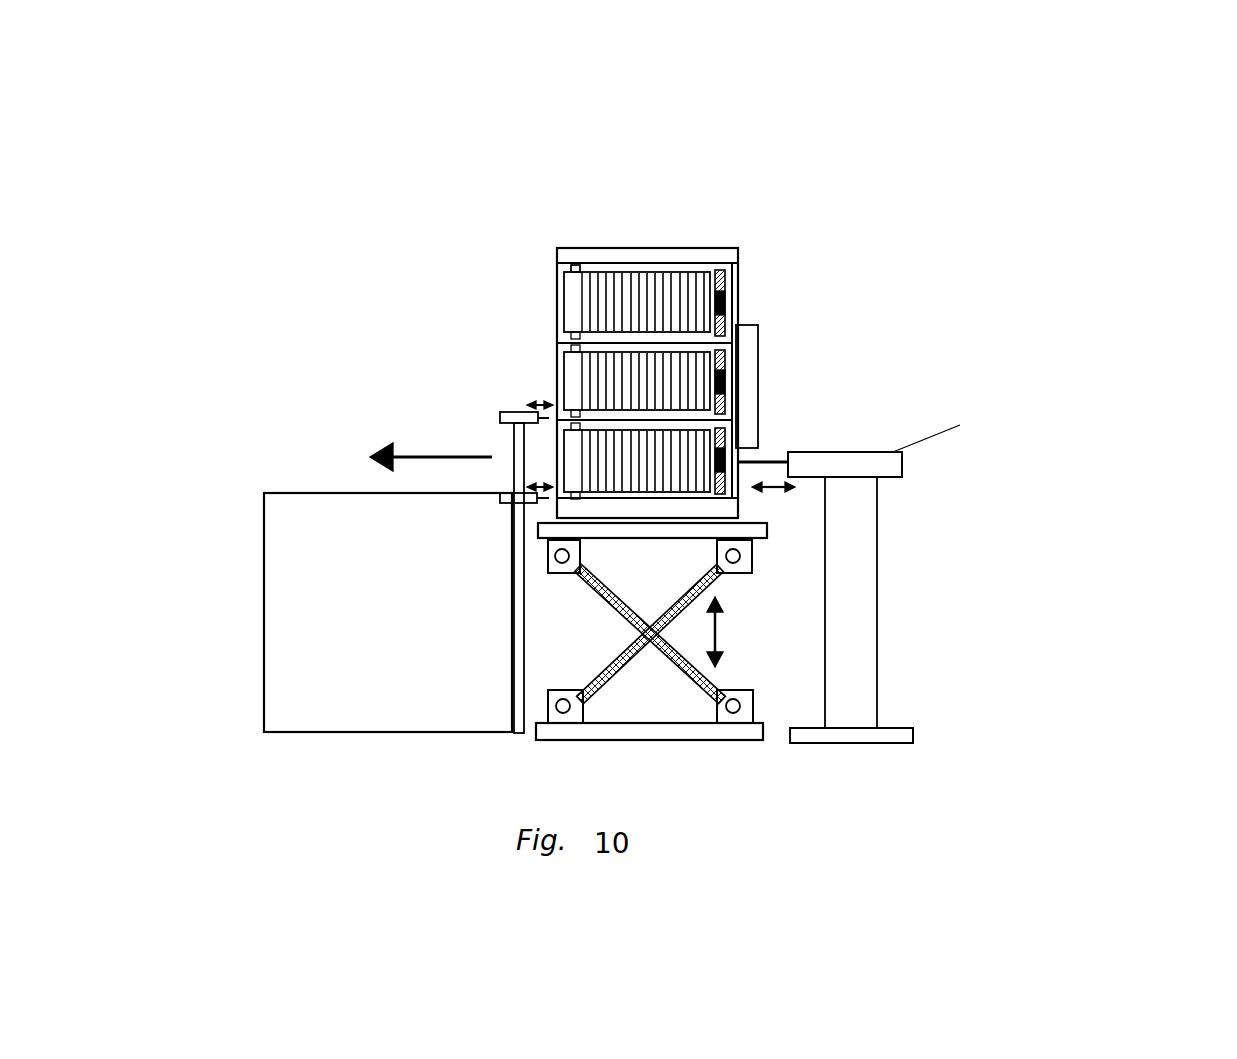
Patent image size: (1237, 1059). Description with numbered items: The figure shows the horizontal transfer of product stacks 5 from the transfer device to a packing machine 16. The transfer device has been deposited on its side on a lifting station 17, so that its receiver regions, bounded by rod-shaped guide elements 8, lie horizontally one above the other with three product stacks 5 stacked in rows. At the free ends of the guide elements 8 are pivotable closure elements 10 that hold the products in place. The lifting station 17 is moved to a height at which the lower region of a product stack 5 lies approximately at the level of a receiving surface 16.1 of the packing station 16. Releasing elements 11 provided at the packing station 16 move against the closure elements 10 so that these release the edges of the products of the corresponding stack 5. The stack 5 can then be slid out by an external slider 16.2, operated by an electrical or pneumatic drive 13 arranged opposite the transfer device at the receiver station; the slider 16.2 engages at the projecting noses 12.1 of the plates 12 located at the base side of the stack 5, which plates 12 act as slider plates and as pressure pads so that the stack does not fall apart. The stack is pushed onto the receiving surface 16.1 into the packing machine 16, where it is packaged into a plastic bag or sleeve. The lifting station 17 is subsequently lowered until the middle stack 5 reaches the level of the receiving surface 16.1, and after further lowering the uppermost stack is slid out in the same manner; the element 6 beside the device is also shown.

The product stack 5 is at (660, 292).
The side box 6 is at (750, 330).
The guide element 8 is at (556, 338).
The closure element 10 is at (575, 268).
The releasing unit 11 is at (500, 492).
The plate 12 is at (727, 362).
The projecting nose 12.1 is at (728, 383).
The electrical or pneumatic drive 13 is at (900, 465).
The packing machine 16 is at (358, 702).
The receiving surface 16.1 is at (310, 493).
The external slider 16.2 is at (757, 461).
The lifting station 17 is at (745, 570).